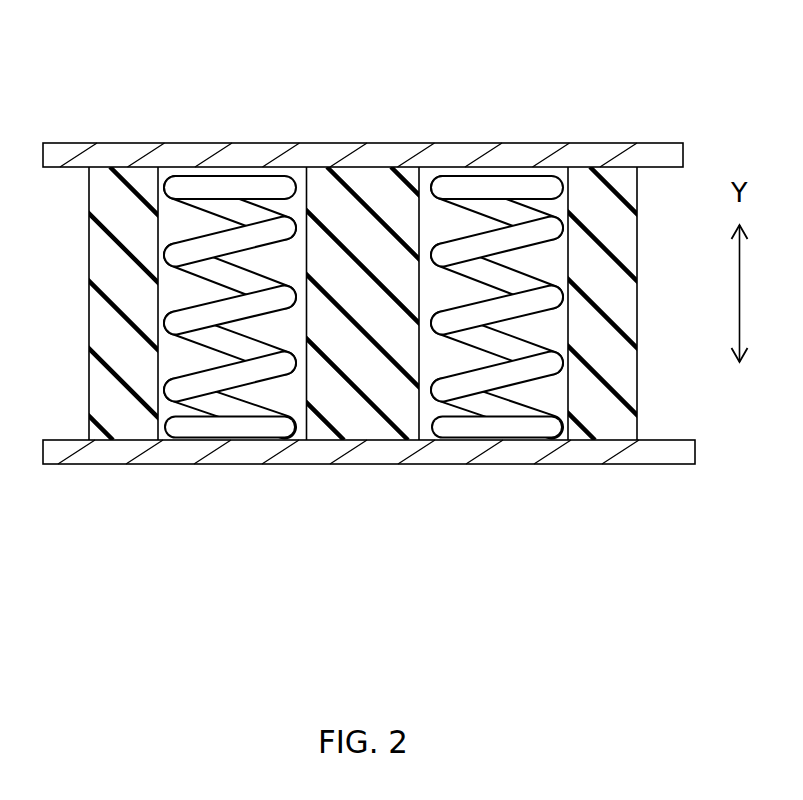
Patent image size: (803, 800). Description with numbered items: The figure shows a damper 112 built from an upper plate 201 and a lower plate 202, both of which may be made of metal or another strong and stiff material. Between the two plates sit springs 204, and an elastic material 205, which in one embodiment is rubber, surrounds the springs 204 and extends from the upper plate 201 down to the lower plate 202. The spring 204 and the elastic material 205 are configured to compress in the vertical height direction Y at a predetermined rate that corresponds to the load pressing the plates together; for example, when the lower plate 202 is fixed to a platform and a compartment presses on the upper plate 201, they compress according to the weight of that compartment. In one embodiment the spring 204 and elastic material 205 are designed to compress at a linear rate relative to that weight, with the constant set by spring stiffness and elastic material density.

The damper 112 is at (260, 98).
The upper plate 201 is at (190, 150).
The lower plate 202 is at (187, 458).
The spring 204 is at (202, 375).
The elastic material 205 is at (112, 273).